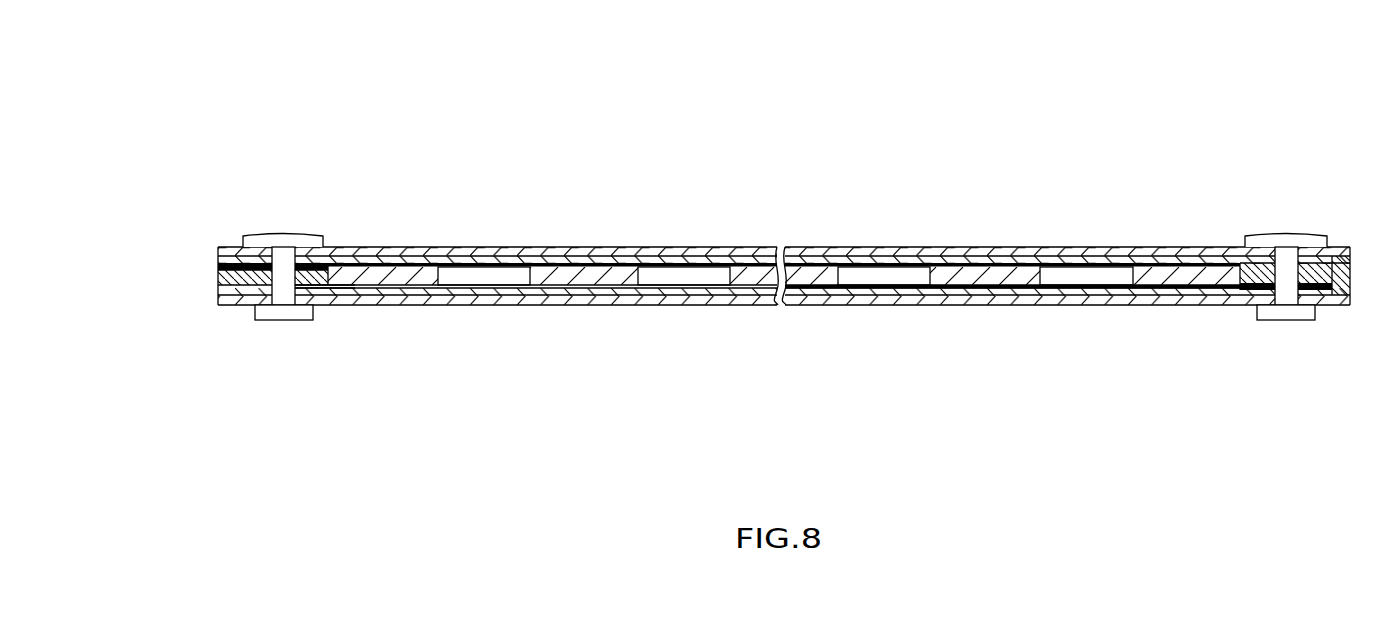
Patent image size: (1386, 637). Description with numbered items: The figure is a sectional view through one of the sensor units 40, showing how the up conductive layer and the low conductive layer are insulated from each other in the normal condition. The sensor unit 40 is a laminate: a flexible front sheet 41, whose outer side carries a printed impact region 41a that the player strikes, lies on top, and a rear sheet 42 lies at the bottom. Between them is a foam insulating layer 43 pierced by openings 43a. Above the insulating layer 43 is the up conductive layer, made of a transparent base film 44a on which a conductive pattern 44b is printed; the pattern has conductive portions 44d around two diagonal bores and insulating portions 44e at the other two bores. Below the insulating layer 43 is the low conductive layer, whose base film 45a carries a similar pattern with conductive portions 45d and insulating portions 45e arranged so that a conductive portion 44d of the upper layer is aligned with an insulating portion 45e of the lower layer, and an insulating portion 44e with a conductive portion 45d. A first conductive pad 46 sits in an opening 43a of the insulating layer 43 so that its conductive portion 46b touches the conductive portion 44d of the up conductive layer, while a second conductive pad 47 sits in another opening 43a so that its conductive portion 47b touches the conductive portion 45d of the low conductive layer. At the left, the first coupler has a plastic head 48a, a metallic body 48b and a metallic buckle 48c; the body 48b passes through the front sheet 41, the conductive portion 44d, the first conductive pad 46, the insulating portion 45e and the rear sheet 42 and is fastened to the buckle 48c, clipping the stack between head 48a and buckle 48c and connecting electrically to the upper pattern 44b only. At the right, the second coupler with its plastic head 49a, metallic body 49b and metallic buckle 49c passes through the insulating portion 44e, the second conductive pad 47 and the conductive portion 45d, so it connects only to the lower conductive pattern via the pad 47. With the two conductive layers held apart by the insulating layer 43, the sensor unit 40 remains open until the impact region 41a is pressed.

The sensor unit 40 is at (734, 131).
The front sheet 41 is at (1097, 252).
The impact region 41a is at (973, 249).
The rear sheet 42 is at (421, 298).
The insulating layer 43 is at (547, 278).
The opening 43a is at (678, 276).
The base film 44a is at (418, 255).
The conductive pattern 44b is at (497, 261).
The conductive portion 44d is at (308, 265).
The insulating portion 44e is at (347, 288).
The base film 45a is at (873, 296).
The conductive portion 45d is at (936, 289).
The insulating portion 45e is at (1229, 266).
The first conductive pad 46 is at (232, 278).
The conductive portion 46b is at (273, 266).
The second conductive pad 47 is at (1325, 272).
The conductive portion 47b is at (1250, 290).
The plastic head 48a is at (256, 243).
The metallic body 48b is at (280, 284).
The metallic buckle 48c is at (281, 313).
The plastic head 49a is at (1293, 240).
The metallic body 49b is at (1305, 300).
The metallic buckle 49c is at (1286, 308).